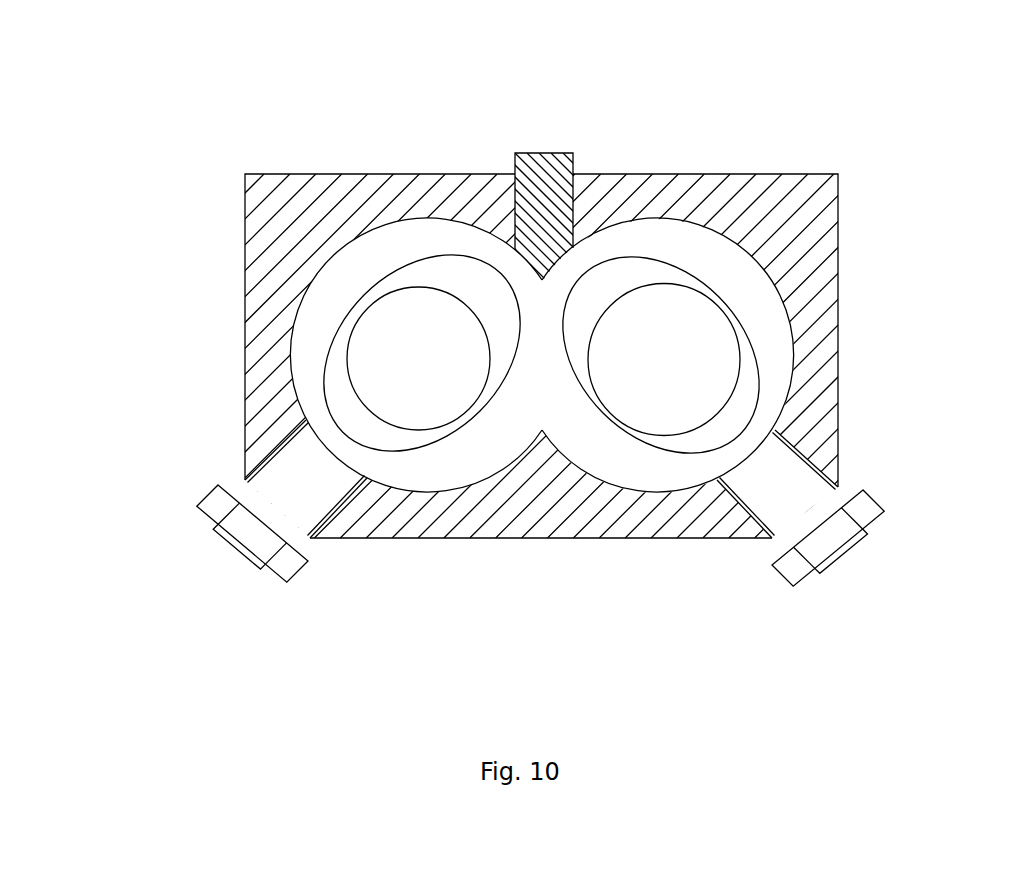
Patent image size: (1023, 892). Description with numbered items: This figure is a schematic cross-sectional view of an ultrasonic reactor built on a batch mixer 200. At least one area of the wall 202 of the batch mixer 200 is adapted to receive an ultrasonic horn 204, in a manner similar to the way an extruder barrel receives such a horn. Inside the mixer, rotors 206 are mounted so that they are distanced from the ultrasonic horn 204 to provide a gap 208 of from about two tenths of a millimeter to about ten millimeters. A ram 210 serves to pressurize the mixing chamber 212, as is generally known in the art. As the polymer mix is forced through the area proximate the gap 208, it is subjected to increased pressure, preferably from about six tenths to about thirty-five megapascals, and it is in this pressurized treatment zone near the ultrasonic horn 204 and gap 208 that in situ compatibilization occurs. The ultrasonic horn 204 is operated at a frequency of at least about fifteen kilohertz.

The batch mixer 200 is at (511, 323).
The wall 202 is at (818, 290).
The ultrasonic horn 204 is at (297, 485).
The rotors 206 is at (385, 355).
The gap 208 is at (338, 448).
The ram 210 is at (553, 188).
The mixing chamber 212 is at (505, 433).